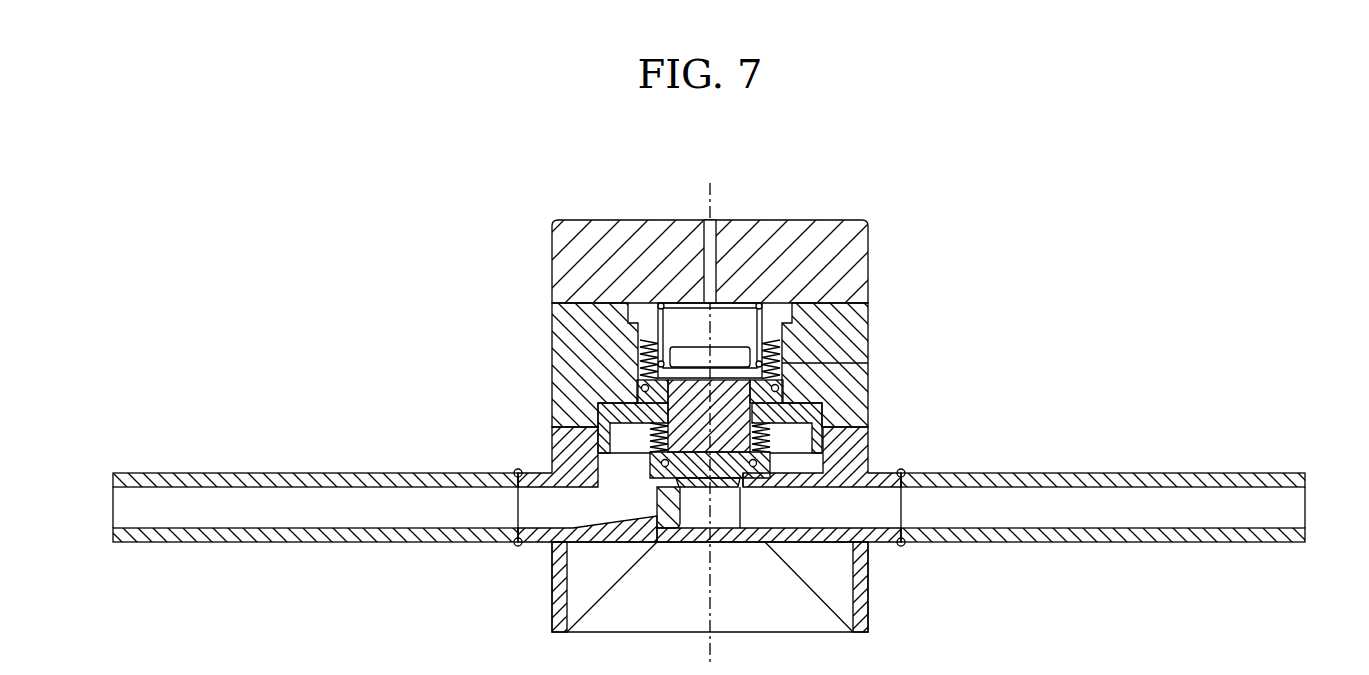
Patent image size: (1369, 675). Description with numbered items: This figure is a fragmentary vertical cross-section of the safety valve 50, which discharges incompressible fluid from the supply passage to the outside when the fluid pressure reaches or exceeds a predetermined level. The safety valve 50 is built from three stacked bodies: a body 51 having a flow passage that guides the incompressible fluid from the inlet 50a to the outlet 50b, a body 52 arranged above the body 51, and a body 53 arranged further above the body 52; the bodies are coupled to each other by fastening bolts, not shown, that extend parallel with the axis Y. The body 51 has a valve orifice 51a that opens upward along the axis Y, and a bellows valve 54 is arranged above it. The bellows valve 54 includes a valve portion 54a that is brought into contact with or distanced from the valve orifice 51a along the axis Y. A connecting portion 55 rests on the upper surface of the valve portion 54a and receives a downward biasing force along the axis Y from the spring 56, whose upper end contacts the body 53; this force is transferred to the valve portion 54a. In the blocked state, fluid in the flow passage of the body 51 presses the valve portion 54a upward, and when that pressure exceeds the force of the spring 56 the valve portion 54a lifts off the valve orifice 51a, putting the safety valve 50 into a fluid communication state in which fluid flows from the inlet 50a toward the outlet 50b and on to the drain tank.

The safety valve 50 is at (921, 184).
The inlet 50a is at (1262, 466).
The outlet 50b is at (137, 465).
The body 51 is at (868, 467).
The valve orifice 51a is at (727, 520).
The body 52 is at (858, 328).
The body 53 is at (858, 250).
The bellows valve 54 is at (648, 436).
The valve portion 54a is at (703, 482).
The connecting portion 55 is at (647, 383).
The spring 56 is at (660, 302).
The axis Y is at (714, 190).